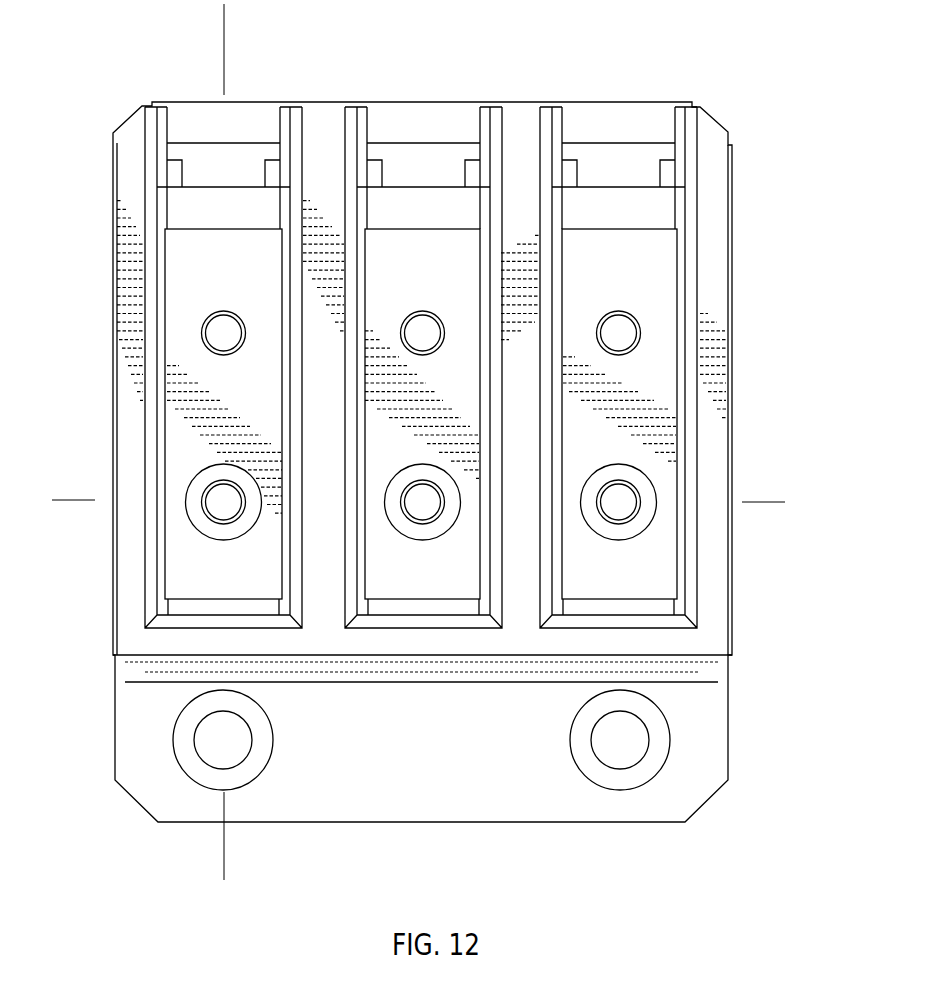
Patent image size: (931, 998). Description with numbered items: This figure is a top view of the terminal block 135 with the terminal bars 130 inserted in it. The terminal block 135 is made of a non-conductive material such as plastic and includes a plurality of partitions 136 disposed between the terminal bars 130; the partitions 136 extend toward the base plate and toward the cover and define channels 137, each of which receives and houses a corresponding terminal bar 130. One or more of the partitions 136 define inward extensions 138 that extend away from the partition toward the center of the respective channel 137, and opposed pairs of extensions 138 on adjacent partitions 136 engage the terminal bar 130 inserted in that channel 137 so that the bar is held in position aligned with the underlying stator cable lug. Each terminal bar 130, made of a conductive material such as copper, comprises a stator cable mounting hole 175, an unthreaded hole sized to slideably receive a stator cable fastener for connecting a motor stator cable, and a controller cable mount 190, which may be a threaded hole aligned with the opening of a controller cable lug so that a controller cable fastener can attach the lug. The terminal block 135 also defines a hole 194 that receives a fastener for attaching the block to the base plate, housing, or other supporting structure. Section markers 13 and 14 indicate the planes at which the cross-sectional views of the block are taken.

The section line 13- 13 is at (60, 512).
The section line 14- 14 is at (232, 15).
The terminal bar 130 is at (647, 263).
The terminal block 135 is at (746, 157).
The partition 136 is at (513, 135).
The channel 137 is at (417, 207).
The inward extension 138 is at (277, 128).
The stator cable mounting hole 175 is at (640, 492).
The controller cable mount 190 is at (618, 317).
The hole 194 is at (620, 767).